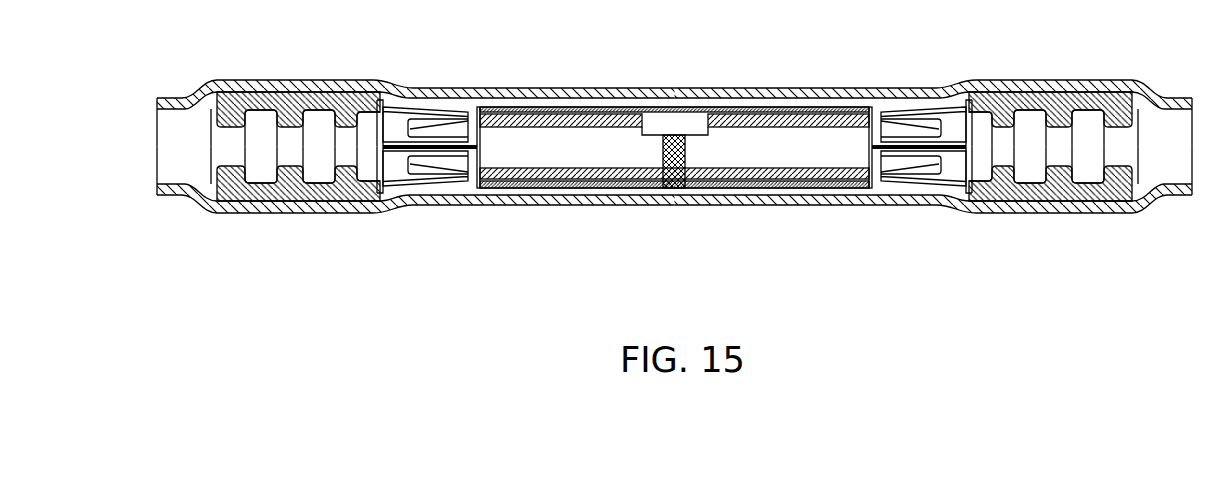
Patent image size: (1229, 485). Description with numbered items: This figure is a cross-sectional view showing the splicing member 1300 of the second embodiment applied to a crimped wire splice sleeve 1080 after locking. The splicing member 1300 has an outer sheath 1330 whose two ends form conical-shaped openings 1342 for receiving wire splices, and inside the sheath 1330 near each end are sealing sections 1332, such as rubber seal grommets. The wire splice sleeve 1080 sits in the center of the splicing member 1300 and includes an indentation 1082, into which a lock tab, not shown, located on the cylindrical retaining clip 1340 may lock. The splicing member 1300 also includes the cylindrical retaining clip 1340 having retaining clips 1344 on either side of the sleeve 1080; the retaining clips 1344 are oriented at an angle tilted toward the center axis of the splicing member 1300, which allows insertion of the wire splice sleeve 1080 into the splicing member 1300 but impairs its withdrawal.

The splicing member 1300 is at (224, 341).
The sheath 1330 is at (400, 88).
The sealing sections 1332 is at (267, 195).
The conical-shaped openings 1342 is at (168, 165).
The retaining clips 1344 is at (390, 185).
The cylindrical retaining clip 1340 is at (443, 153).
The wire splice sleeve 1080 is at (788, 185).
The indentation 1082 is at (700, 85).